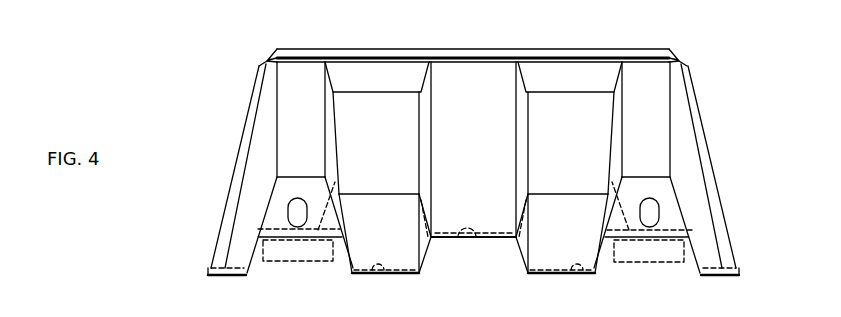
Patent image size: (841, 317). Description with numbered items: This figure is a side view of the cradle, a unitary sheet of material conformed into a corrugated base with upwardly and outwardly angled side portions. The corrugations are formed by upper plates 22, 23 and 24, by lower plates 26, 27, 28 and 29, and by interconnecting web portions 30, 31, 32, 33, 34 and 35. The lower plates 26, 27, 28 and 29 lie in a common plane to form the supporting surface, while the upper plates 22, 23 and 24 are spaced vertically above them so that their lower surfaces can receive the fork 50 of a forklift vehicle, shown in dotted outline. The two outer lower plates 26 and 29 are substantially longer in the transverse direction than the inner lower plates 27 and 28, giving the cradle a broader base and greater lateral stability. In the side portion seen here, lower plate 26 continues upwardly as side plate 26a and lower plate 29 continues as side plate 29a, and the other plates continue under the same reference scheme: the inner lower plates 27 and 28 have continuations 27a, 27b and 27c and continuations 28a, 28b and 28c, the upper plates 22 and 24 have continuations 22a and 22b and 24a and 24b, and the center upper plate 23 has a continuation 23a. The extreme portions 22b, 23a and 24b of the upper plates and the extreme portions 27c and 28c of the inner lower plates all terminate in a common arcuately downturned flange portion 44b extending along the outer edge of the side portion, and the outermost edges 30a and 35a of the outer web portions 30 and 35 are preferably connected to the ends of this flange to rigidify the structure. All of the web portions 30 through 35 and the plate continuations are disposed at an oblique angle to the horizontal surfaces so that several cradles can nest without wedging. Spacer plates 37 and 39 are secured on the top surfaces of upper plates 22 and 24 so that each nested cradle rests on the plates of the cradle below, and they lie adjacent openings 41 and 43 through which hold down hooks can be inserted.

The upper plate 22 is at (272, 262).
The continuation of upper plate 22 22a is at (316, 193).
The extreme portion of upper plate 22 22b is at (320, 131).
The center upper plate 23 is at (477, 240).
The continuation of center upper plate 23a is at (497, 131).
The upper plate 24 is at (653, 250).
The continuation of upper plate 24 24a is at (661, 193).
The extreme portion of upper plate 24 24b is at (668, 131).
The outer lower plate 26 is at (222, 268).
The side plate 26a is at (237, 181).
The inner lower plate 27 is at (373, 272).
The continuation of lower plate 27 27a is at (399, 229).
The continuation of lower plate 27 27b is at (395, 131).
The extreme portion of lower plate 27 27c is at (367, 78).
The inner lower plate 28 is at (593, 272).
The continuation of lower plate 28 28a is at (584, 239).
The continuation of lower plate 28 28b is at (585, 131).
The extreme portion of lower plate 28 28c is at (564, 78).
The outer lower plate 29 is at (732, 250).
The side plate 29a is at (720, 219).
The outer web portion 30 is at (237, 277).
The outermost edge of web portion 30 30a is at (248, 218).
The web portion 31 is at (348, 262).
The web portion 32 is at (421, 258).
The web portion 33 is at (518, 247).
The web portion 34 is at (602, 260).
The outer web portion 35 is at (700, 268).
The outermost edge of web portion 35 35a is at (693, 185).
The spacer plate 37 is at (338, 185).
The spacer plate 39 is at (611, 182).
The opening 41 is at (290, 213).
The opening 43 is at (655, 211).
The arcuately downturned flange portion 44b is at (432, 48).
The fork 50 is at (300, 262).